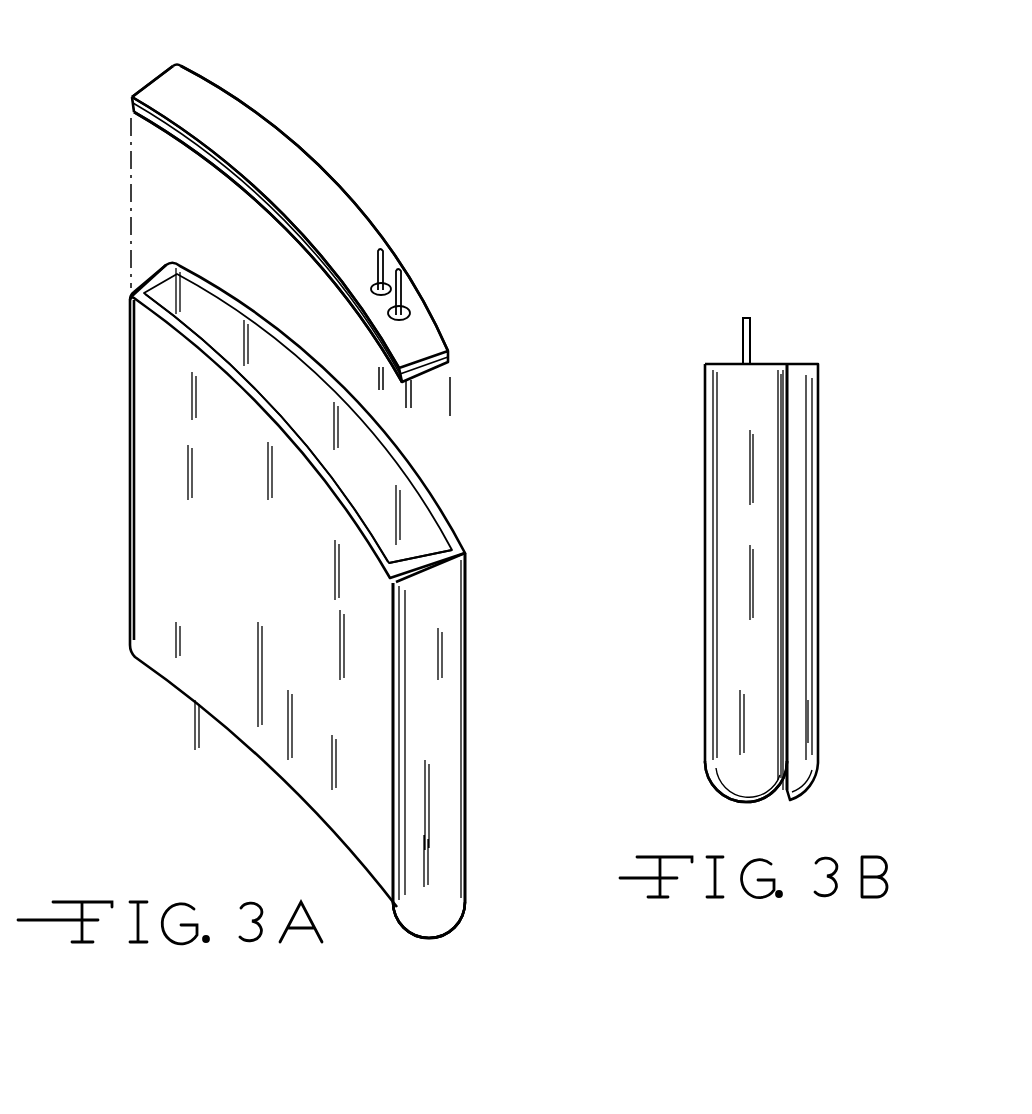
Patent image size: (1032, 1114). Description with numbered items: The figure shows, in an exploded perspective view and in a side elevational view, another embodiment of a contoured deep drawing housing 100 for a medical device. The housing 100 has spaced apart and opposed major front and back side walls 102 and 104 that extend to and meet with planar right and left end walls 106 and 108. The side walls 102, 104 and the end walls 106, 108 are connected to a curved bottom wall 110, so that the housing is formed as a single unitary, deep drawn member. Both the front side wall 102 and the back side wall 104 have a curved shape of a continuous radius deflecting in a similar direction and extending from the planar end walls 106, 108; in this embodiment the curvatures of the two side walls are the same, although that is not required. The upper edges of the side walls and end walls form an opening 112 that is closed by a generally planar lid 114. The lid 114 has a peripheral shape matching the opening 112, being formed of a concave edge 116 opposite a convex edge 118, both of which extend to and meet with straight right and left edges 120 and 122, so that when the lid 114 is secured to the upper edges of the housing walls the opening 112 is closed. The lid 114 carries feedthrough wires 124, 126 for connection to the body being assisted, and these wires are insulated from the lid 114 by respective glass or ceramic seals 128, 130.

In FIG. 3A, the contoured deep drawing housing 100 is at (542, 347).
In FIG. 3A, the major front side wall 102 is at (210, 685).
In FIG. 3A, the major back side wall 104 is at (224, 324).
In FIG. 3B, the major back side wall 104 is at (797, 443).
In FIG. 3A, the planar right end wall 106 is at (440, 600).
In FIG. 3B, the planar right end wall 106 is at (765, 528).
In FIG. 3A, the planar left end wall 108 is at (162, 294).
In FIG. 3A, the curved bottom wall 110 is at (445, 932).
In FIG. 3B, the curved bottom wall 110 is at (763, 800).
In FIG. 3A, the opening 112 is at (395, 490).
In FIG. 3A, the lid 114 is at (270, 143).
In FIG. 3A, the concave edge 116 is at (218, 170).
In FIG. 3A, the convex edge 118 is at (243, 102).
In FIG. 3A, the straight right edge 120 is at (432, 362).
In FIG. 3A, the straight left edge 122 is at (155, 80).
In FIG. 3A, the feedthrough wire 124 is at (402, 292).
In FIG. 3B, the feedthrough wire 124 is at (752, 337).
In FIG. 3A, the feedthrough wire 126 is at (383, 260).
In FIG. 3A, the glass or ceramic seal 128 is at (406, 321).
In FIG. 3A, the glass or ceramic seal 130 is at (372, 288).